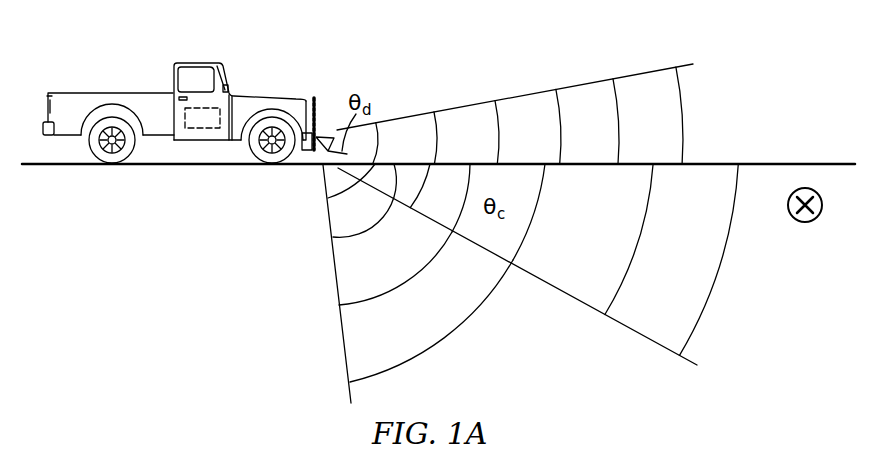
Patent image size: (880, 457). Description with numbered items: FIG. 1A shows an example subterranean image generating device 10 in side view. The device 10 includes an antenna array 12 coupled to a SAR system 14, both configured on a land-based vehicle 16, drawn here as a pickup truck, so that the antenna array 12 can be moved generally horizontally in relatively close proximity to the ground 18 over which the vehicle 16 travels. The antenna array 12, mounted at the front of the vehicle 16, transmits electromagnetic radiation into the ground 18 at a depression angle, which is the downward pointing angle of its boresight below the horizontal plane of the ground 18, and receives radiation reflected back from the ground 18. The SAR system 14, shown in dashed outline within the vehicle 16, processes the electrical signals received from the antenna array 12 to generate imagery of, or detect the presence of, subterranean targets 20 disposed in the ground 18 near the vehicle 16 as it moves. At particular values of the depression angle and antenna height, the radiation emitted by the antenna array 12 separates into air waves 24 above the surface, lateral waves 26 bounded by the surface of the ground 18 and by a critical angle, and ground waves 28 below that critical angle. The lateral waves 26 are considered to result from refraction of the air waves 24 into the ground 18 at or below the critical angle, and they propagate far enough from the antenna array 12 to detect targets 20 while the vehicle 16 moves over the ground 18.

The subterranean image generating device 10 is at (177, 112).
The antenna array 12 is at (314, 98).
The SAR system 14 is at (200, 128).
The land-based vehicle 16 is at (203, 62).
The ground 18 is at (252, 239).
The targets 20 is at (806, 223).
The air waves 24 is at (664, 133).
The lateral waves 26 is at (599, 241).
The ground waves 28 is at (439, 326).